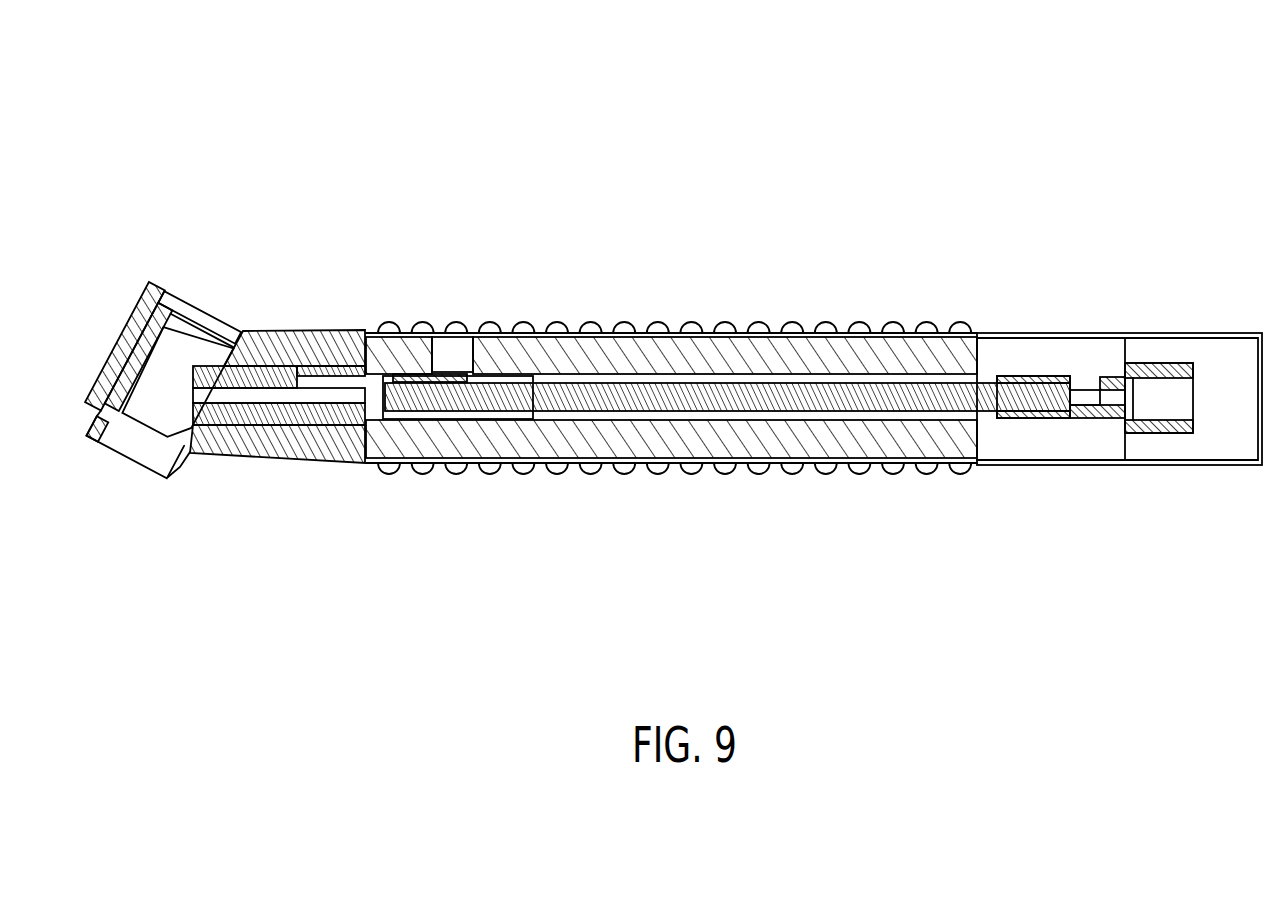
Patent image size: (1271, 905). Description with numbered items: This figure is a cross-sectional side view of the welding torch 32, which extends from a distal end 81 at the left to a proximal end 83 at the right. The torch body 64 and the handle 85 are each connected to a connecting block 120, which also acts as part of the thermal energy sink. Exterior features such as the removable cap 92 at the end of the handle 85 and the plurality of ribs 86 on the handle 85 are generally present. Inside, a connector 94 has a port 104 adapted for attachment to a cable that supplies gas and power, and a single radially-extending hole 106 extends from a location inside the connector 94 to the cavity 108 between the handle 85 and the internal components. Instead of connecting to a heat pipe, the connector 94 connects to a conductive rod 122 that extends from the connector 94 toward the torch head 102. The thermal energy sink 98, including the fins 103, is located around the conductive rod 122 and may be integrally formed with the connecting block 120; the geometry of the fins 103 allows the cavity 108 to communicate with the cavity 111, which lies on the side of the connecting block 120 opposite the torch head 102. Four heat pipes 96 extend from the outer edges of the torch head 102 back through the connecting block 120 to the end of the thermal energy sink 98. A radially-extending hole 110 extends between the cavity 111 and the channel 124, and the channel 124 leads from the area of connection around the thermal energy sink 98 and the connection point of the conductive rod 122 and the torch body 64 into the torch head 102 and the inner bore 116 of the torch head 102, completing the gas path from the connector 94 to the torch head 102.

The welding torch 32 is at (420, 133).
The torch head 102 is at (135, 340).
The inner bore 116 is at (178, 370).
The channel 124 is at (303, 395).
The radially-extending hole 110 is at (452, 370).
The heat pipe 96 is at (462, 345).
The cavity 111 is at (462, 350).
The ribs 86 is at (893, 330).
The handle 85 is at (1015, 333).
The cavity 108 is at (1049, 353).
The radially-extending hole 106 is at (1089, 385).
The removable cap 92 is at (1180, 330).
The torch body 64 is at (300, 455).
The distal end 81 is at (168, 519).
The connecting block 120 is at (418, 465).
The fins 103 is at (690, 440).
The thermal energy sink 98 is at (875, 440).
The conductive rod 122 is at (1030, 418).
The connector 94 is at (1108, 418).
The port 104 is at (1165, 407).
The proximal end 83 is at (1256, 521).